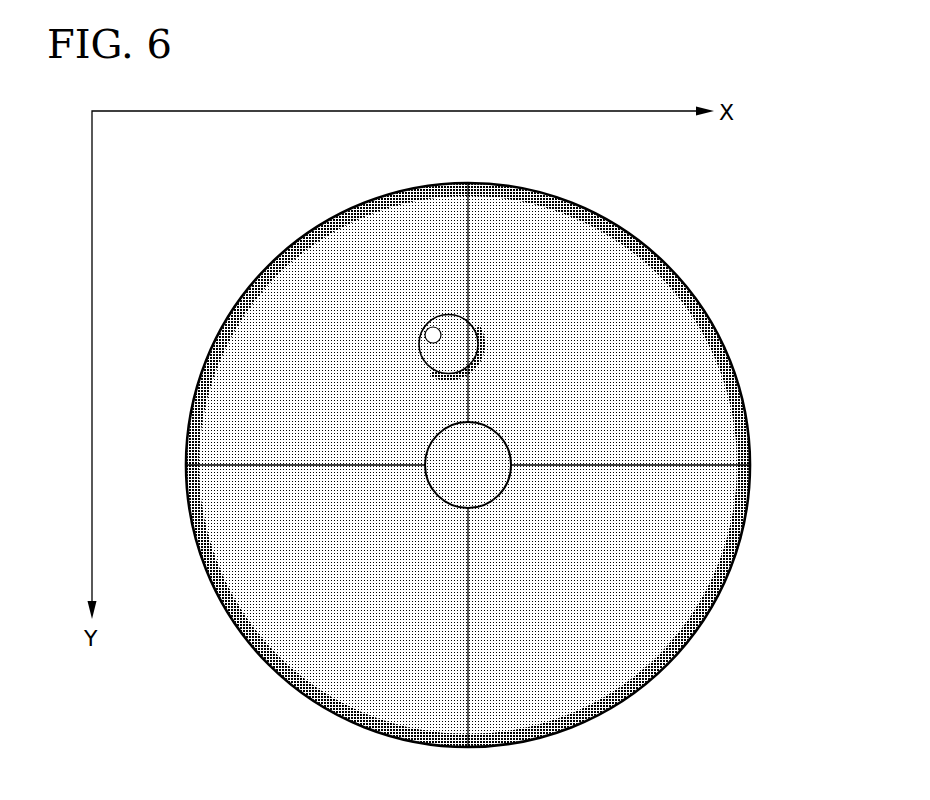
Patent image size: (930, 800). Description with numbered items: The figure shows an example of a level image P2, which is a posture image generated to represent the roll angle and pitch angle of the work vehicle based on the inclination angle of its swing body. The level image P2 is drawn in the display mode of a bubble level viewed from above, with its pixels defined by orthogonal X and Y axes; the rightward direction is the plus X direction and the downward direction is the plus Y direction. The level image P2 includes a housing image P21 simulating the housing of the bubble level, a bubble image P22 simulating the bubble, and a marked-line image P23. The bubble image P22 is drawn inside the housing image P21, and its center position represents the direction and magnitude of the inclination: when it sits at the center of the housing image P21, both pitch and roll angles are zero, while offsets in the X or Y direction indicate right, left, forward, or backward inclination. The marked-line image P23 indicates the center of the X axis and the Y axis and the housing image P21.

The level image P2 is at (493, 446).
The housing image P21 is at (710, 270).
The bubble image P22 is at (432, 320).
The marked-line image P23 is at (707, 463).